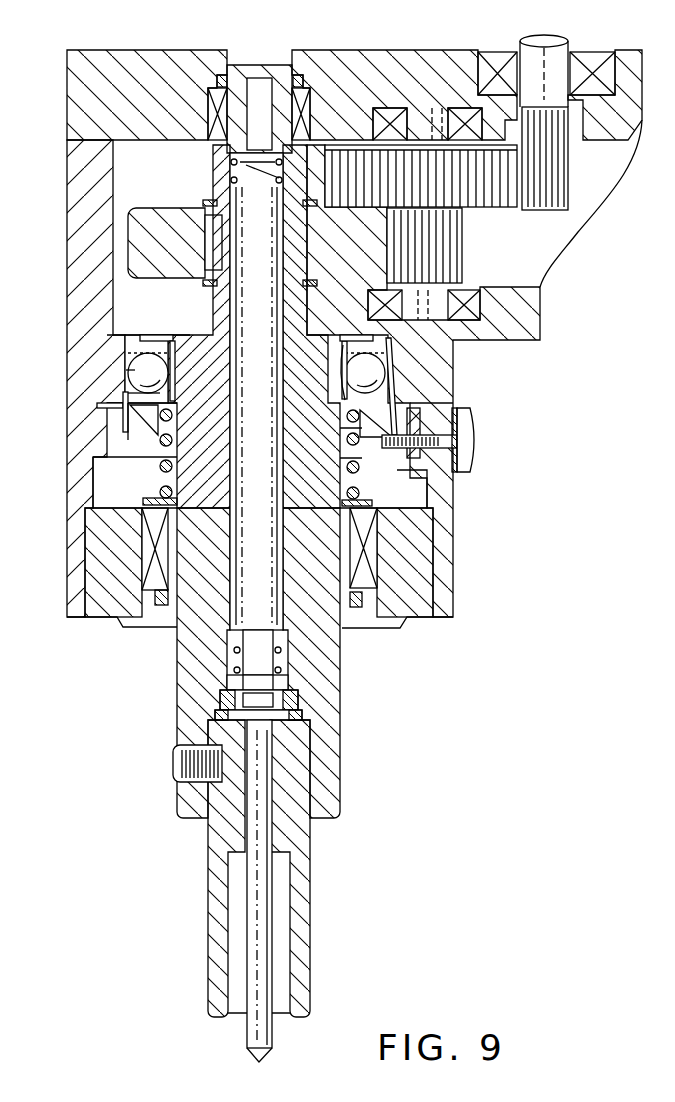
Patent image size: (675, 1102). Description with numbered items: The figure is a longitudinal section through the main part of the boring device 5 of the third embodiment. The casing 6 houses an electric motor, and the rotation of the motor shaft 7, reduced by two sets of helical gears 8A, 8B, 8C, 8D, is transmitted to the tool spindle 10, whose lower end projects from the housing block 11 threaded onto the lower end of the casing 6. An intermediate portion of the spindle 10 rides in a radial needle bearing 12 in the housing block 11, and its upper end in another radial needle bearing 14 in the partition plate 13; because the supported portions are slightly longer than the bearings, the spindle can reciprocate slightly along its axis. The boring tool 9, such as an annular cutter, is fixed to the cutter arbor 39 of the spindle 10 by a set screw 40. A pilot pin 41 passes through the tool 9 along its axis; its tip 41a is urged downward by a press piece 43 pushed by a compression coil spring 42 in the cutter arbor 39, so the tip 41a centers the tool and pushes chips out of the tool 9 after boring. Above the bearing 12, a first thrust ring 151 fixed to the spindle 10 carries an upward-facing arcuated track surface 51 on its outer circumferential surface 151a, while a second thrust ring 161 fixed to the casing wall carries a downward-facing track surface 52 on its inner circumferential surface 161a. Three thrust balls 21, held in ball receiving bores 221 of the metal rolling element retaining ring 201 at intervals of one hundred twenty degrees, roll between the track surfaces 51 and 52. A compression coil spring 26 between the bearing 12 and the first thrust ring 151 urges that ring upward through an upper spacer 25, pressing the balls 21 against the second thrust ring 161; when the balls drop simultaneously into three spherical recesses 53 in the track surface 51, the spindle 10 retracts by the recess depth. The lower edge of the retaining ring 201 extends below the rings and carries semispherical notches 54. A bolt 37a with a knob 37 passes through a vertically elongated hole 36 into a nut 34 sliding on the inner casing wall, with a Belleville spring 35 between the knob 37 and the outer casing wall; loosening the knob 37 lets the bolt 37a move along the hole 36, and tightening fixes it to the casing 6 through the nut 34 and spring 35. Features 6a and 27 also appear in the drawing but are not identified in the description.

The boring device 5 is at (67, 605).
The casing 6 is at (67, 548).
The housing bore 6a is at (455, 425).
The motor shaft 7 is at (562, 58).
The helical gear 8A is at (556, 185).
The helical gear 8B is at (485, 205).
The helical gear 8C is at (455, 258).
The helical gear 8D is at (138, 235).
The boring tool 9 is at (300, 915).
The tool spindle 10 is at (330, 650).
The housing block 11 is at (410, 625).
The radial needle bearing 12 is at (370, 550).
The partition plate 13 is at (67, 130).
The radial needle bearing 14 is at (208, 100).
The thrust ball 21 is at (140, 382).
The upper spacer 25 is at (160, 478).
The compression coil spring 26 is at (160, 486).
The roller 27 is at (360, 360).
The nut 34 is at (350, 500).
The Belleville spring 35 is at (440, 470).
The vertically elongated hole 36 is at (440, 442).
The knob 37 is at (468, 447).
The bolt 37a is at (456, 462).
The cutter arbor 39 is at (245, 630).
The set screw 40 is at (175, 763).
The pilot pin 41 is at (255, 940).
The tip of pilot pin 41a is at (262, 1058).
The compression coil spring 42 is at (275, 652).
The press piece 43 is at (275, 692).
The track surface 51 is at (122, 412).
The track surface 52 is at (133, 378).
The spherical recess 53 is at (124, 425).
The semispherical notch 54 is at (152, 420).
The first thrust ring 151 is at (174, 335).
The outer circumferential surface 151a is at (122, 335).
The second thrust ring 161 is at (125, 338).
The inner circumferential surface 161a is at (125, 395).
The rolling element retaining ring 201 is at (118, 440).
The ball receiving bore 221 is at (138, 360).